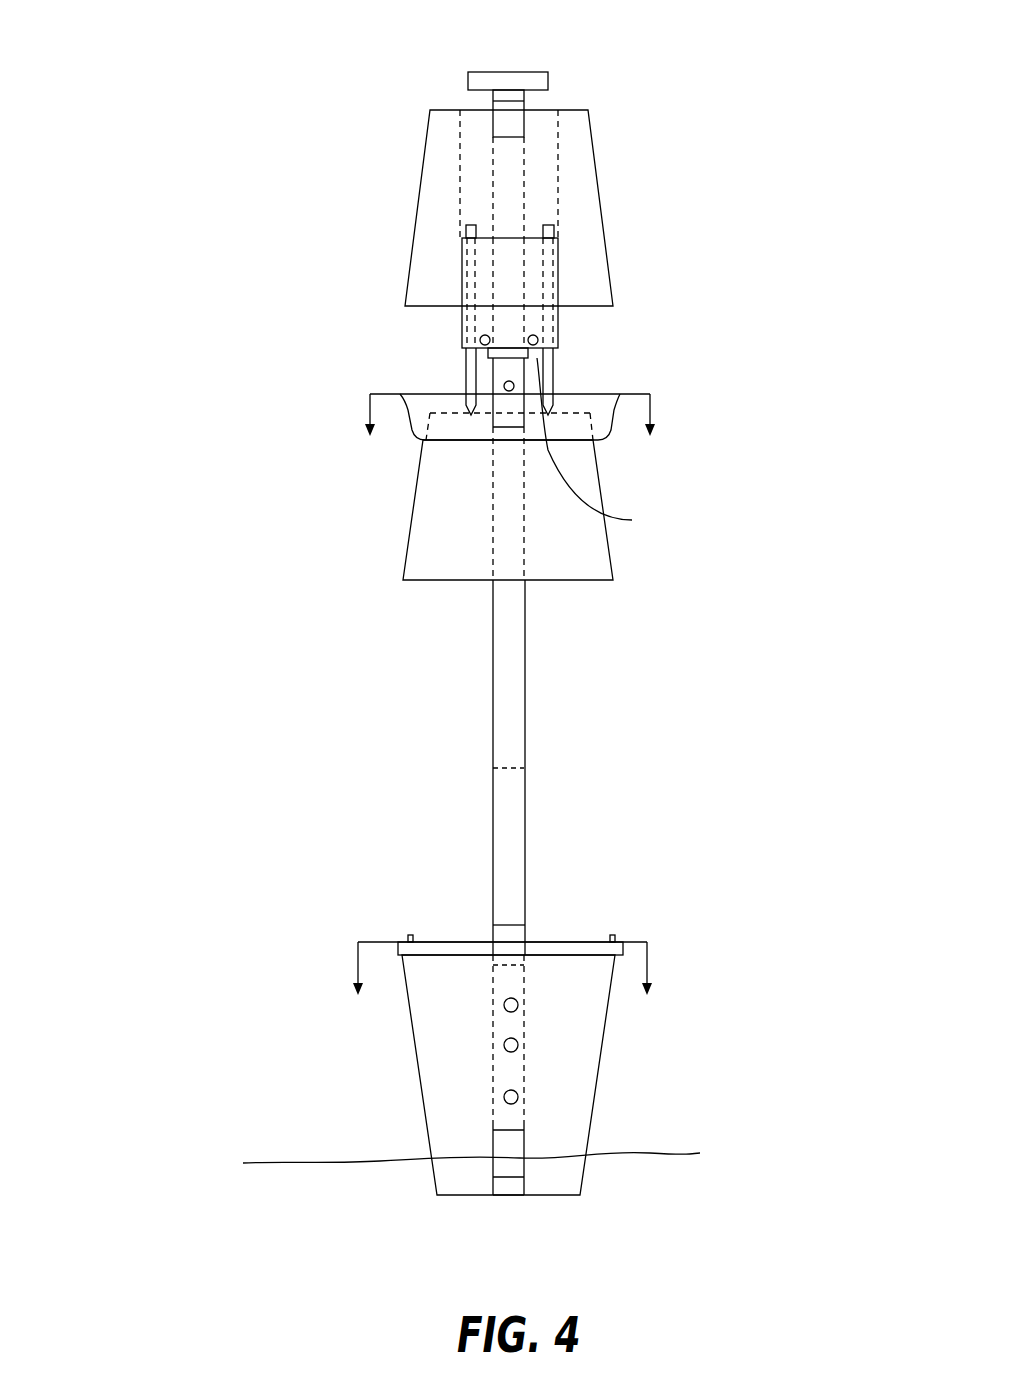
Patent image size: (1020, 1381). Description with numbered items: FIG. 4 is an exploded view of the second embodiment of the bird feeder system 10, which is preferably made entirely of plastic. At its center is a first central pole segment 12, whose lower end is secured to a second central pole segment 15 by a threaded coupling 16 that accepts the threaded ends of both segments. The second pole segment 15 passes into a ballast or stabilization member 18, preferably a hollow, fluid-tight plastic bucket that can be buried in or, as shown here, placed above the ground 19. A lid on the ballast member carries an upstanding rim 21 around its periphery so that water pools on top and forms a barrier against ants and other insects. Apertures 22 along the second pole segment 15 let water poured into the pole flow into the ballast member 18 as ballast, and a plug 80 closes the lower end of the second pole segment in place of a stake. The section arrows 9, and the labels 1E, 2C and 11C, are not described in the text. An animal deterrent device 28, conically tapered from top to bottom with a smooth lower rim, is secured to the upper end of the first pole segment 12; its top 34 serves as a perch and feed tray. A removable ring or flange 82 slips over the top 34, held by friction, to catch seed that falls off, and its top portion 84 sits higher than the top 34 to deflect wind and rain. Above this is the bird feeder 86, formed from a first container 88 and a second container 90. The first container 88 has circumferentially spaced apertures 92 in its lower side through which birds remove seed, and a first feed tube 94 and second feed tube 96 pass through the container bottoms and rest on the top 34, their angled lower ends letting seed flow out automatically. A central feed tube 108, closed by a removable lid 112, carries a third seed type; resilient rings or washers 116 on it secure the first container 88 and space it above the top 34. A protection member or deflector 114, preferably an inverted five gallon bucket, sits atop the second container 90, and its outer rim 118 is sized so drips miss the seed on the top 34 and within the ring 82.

The bird feeder system 10 is at (386, 720).
The first central pole segment 12 is at (527, 802).
The second central pole segment 15 is at (495, 1025).
The coupling 16 is at (502, 417).
The ballast or stabilization member 18 is at (593, 1108).
The ground 19 is at (297, 1160).
The upstanding rim 21 is at (408, 935).
The apertures 22 is at (504, 1045).
The animal deterrent device 28 is at (613, 558).
The top 34 is at (583, 394).
The plug 80 is at (493, 1182).
The removable ring or flange 82 is at (603, 440).
The top portion of the ring 84 is at (392, 394).
The bird feeder 86 is at (614, 210).
The first container 88 is at (558, 272).
The second container 90 is at (558, 162).
The apertures 92 is at (538, 340).
The first feed tube 94 is at (468, 357).
The second feed tube 96 is at (557, 368).
The feed tube 108 is at (523, 147).
The lid 112 is at (485, 72).
The protection member or deflector 114 is at (430, 110).
The rings or washers 116 is at (612, 449).
The outer rim 118 is at (612, 306).
The section line 9- 9 is at (505, 973).
The base variant 1E is at (647, 1047).
The lower flange 2C is at (588, 942).
The pin hole 11C is at (504, 386).